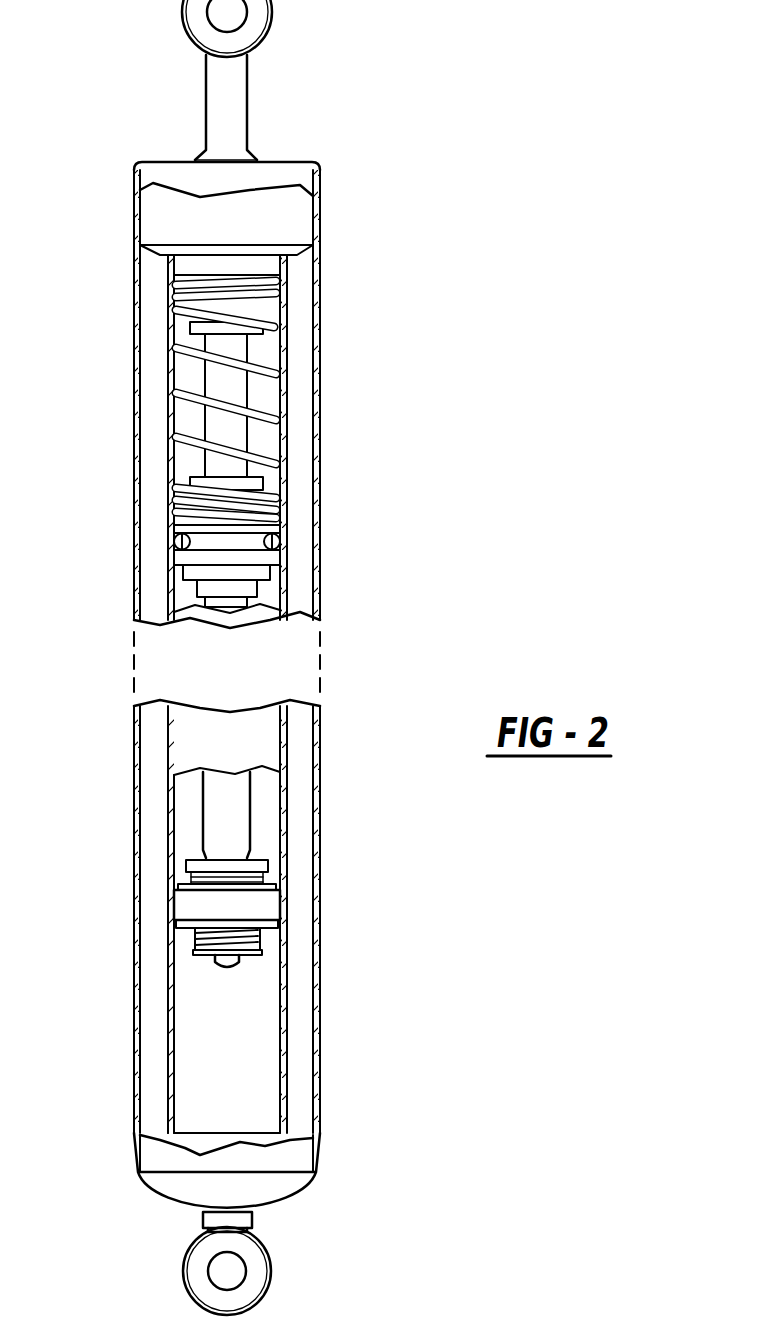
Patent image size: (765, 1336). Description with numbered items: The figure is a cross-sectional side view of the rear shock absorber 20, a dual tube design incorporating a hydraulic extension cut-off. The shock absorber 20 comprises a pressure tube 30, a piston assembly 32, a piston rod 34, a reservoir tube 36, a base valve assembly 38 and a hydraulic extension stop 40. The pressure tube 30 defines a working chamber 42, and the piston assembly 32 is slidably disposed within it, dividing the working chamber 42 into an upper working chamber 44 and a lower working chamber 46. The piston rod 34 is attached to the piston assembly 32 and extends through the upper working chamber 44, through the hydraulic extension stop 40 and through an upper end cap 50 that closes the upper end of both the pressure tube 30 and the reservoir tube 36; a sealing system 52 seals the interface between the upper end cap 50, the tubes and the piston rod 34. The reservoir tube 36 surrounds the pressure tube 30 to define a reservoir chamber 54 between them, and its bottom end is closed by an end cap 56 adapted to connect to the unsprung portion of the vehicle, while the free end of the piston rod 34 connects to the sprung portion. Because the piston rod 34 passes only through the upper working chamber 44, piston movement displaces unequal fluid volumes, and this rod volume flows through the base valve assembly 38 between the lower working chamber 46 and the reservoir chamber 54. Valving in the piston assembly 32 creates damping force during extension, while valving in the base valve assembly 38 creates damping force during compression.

The rear shock absorber 20 is at (450, 132).
The pressure tube 30 is at (287, 1008).
The piston assembly 32 is at (270, 897).
The piston rod 34 is at (236, 805).
The reservoir tube 36 is at (318, 930).
The base valve assembly 38 is at (250, 1132).
The hydraulic extension stop 40 is at (270, 442).
The working chamber 42 is at (220, 992).
The upper working chamber 44 is at (188, 810).
The lower working chamber 46 is at (238, 1076).
The upper end cap 50 is at (273, 220).
The sealing system 52 is at (258, 156).
The reservoir chamber 54 is at (153, 1036).
The end cap 56 is at (268, 1185).